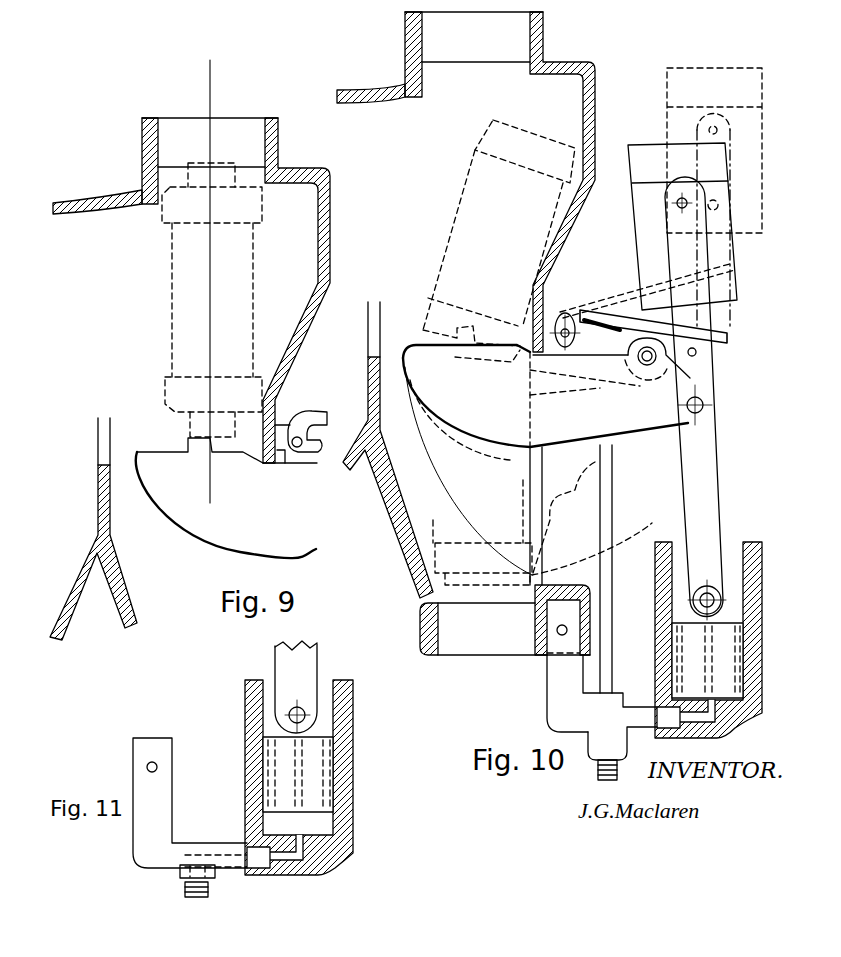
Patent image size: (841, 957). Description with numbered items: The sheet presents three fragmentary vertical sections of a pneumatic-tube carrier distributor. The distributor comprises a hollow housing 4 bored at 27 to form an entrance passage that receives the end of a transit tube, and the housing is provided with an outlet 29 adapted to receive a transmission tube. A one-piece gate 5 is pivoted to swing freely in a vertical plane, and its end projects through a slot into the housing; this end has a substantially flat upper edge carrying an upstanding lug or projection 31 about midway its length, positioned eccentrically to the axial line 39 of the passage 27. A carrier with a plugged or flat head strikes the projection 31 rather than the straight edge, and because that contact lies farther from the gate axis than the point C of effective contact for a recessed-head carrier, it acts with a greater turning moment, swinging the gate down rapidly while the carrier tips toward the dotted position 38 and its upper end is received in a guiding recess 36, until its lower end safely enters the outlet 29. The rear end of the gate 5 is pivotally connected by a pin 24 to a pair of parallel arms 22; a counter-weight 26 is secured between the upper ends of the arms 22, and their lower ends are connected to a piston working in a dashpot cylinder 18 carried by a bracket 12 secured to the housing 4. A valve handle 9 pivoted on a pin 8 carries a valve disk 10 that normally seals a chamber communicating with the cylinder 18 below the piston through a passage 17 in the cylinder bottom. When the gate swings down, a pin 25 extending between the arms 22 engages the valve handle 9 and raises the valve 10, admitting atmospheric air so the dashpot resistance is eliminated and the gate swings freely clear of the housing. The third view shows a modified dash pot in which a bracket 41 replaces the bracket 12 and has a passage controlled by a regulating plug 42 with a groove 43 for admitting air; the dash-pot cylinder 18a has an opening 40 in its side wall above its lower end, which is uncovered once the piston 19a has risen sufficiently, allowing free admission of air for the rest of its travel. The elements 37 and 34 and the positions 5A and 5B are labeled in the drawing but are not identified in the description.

In FIG. 9, the axial line 39 is at (212, 103).
In FIG. 9, the plunger 37 is at (172, 250).
In FIG. 9, the upstanding lug or projection 31 is at (188, 441).
In FIG. 9, the point of effective contact C is at (215, 453).
In FIG. 9, the gate 5 is at (212, 540).
In FIG. 10, the hollow housing 4 is at (353, 88).
In FIG. 10, the bore / entrance passage 27 is at (530, 33).
In FIG. 10, the guiding recess 36 is at (567, 97).
In FIG. 10, the tipped carrier position 38 is at (473, 173).
In FIG. 10, the pipe 34 is at (381, 357).
In FIG. 10, the valve handle 9 is at (580, 297).
In FIG. 10, the counter-weight 26 is at (703, 67).
In FIG. 10, the pin 25 is at (727, 303).
In FIG. 10, the pin 24 is at (703, 413).
In FIG. 10, the parallel arms 22 is at (720, 470).
In FIG. 11, the parallel arms 22 is at (317, 660).
In FIG. 10, the valve disk 10 is at (628, 330).
In FIG. 10, the pin 8 is at (570, 343).
In FIG. 10, the valve open position 5A is at (467, 445).
In FIG. 10, the valve closed position 5B is at (627, 547).
In FIG. 10, the outlet 29 is at (458, 657).
In FIG. 10, the bracket 12 is at (565, 705).
In FIG. 10, the dashpot cylinder 18 is at (742, 723).
In FIG. 11, the bracket 41 is at (187, 805).
In FIG. 11, the piston 19a is at (310, 770).
In FIG. 11, the dash-pot cylinder 18a is at (352, 772).
In FIG. 11, the opening 40 is at (353, 813).
In FIG. 11, the passage 17 is at (308, 875).
In FIG. 11, the groove 43 is at (180, 877).
In FIG. 11, the regulating plug 42 is at (210, 888).